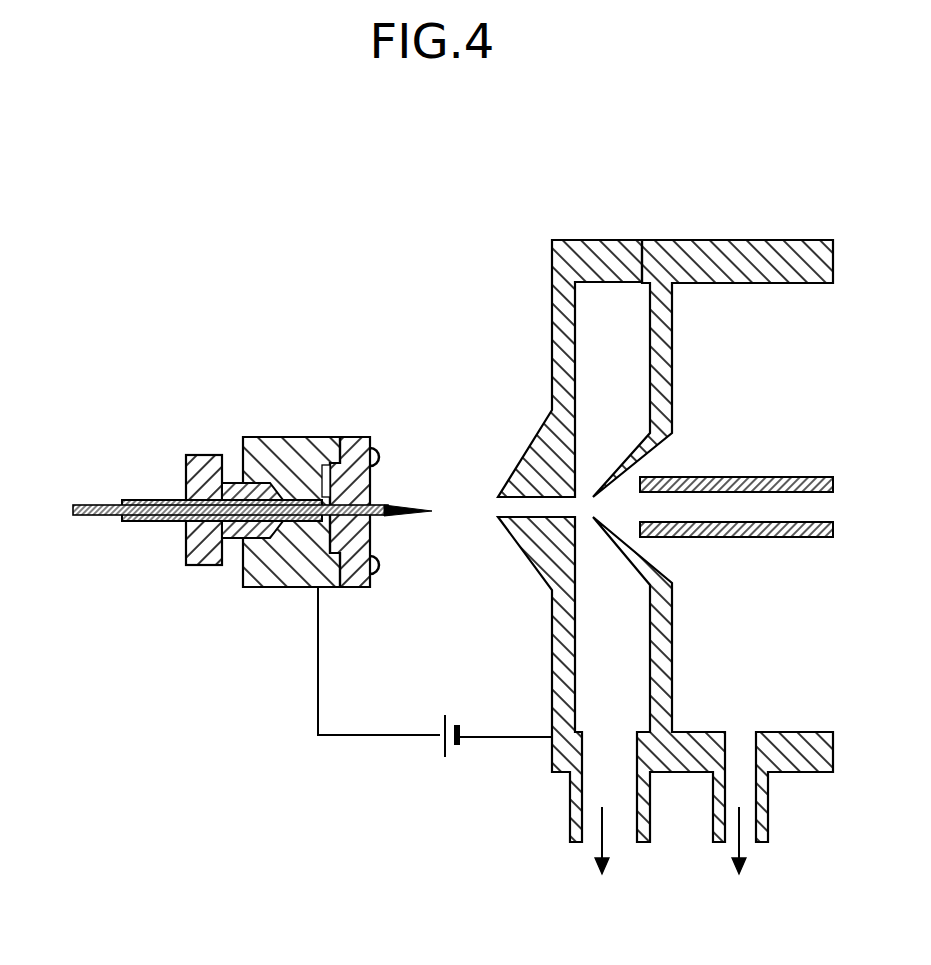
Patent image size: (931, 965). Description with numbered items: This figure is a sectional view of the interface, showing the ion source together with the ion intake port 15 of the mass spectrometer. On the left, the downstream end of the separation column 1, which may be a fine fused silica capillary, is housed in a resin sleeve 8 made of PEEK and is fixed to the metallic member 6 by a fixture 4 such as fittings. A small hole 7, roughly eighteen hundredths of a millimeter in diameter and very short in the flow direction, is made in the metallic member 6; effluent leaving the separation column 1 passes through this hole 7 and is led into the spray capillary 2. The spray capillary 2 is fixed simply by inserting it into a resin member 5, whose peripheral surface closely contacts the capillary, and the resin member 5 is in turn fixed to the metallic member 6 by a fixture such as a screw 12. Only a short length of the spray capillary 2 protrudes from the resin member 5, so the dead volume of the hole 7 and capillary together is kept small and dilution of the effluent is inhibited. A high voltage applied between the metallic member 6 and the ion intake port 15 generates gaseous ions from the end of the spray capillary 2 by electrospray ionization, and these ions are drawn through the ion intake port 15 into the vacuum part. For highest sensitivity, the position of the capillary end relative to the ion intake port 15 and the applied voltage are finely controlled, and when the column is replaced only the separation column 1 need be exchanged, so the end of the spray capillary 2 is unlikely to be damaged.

The separation column 1 is at (97, 505).
The spray capillary 2 is at (397, 516).
The fixture 4 is at (203, 455).
The resin member 5 is at (360, 437).
The metallic member 6 is at (270, 588).
The hole 7 is at (322, 465).
The resin sleeve 8 is at (124, 523).
The screw 12 is at (385, 455).
The ion intake port 15 is at (492, 505).